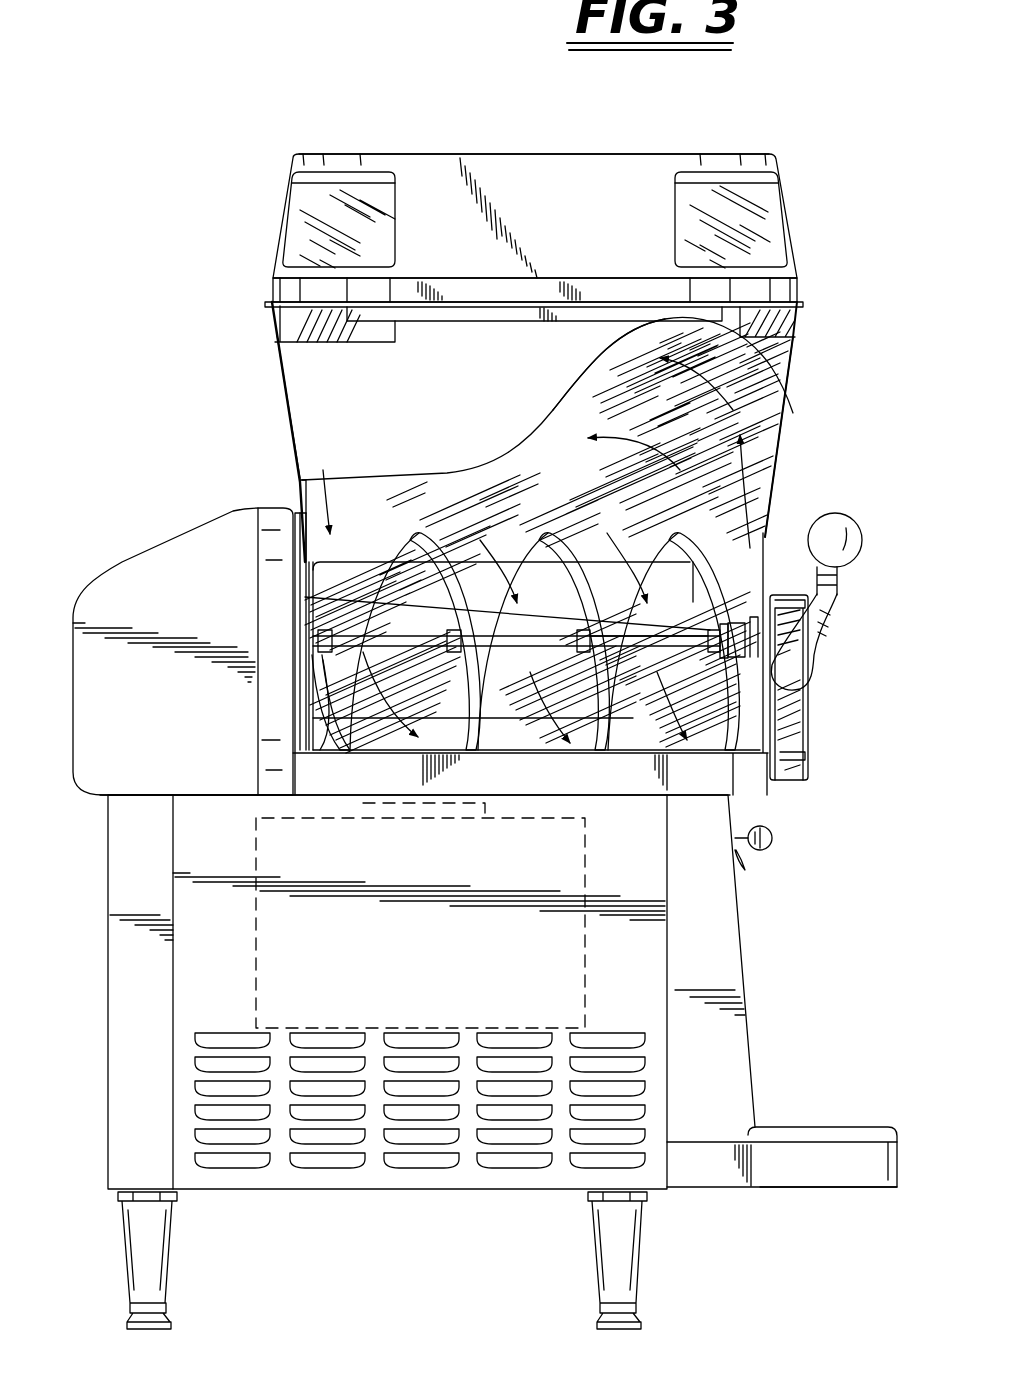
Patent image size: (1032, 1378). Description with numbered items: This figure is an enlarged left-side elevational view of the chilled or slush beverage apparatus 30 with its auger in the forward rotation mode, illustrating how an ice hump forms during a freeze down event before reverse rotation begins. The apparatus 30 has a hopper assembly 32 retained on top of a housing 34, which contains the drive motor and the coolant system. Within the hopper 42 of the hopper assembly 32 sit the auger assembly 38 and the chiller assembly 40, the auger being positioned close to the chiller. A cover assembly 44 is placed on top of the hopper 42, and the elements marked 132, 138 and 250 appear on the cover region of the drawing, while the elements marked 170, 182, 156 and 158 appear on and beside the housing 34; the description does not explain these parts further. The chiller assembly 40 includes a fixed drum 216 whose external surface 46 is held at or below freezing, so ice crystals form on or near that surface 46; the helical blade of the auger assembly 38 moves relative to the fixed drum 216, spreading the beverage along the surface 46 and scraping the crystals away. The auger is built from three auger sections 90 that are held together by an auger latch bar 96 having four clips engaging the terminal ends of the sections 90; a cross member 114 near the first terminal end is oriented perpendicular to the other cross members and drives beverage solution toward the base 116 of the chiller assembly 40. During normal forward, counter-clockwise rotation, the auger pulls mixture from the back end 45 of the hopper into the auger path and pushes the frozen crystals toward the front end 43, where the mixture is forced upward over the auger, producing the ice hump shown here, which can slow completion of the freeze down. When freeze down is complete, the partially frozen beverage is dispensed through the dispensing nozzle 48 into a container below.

The beverage apparatus 30 is at (163, 217).
The hopper assembly 32 is at (218, 351).
The housing 34 is at (97, 939).
The auger assembly 38 is at (707, 548).
The chiller assembly 40 is at (522, 504).
The hopper 42 is at (280, 406).
The front end 43 is at (770, 457).
The cover assembly 44 is at (262, 169).
The back end 45 is at (297, 467).
The external surface 46 is at (531, 702).
The dispensing nozzle 48 is at (812, 770).
The auger sections 90 is at (492, 745).
The auger latch bar 96 is at (633, 634).
The cross member 114 is at (418, 584).
The base 116 is at (350, 570).
The lid top 132 is at (408, 153).
The lid sealing bar 138 is at (531, 318).
The drip tray bottom 156 is at (840, 1180).
The drip tray 158 is at (857, 1127).
The control unit 170 is at (363, 780).
The side panel 182 is at (741, 966).
The fixed drum 216 is at (454, 556).
The lid handle panel 250 is at (292, 214).